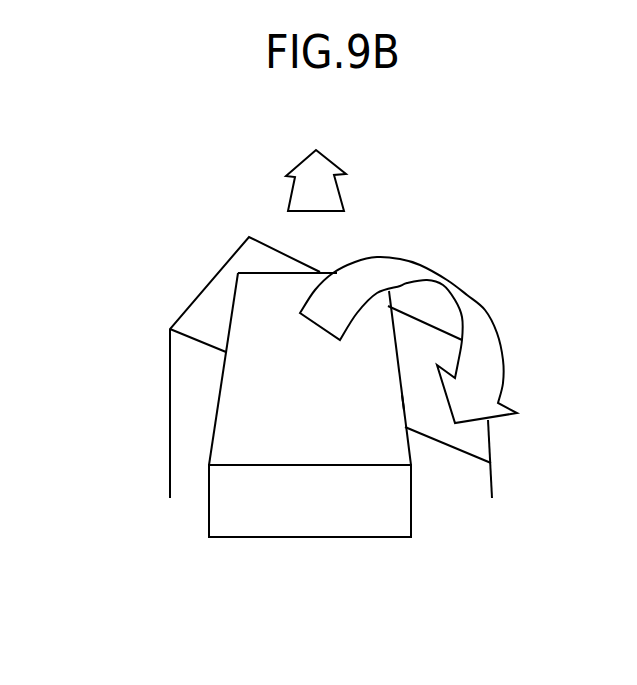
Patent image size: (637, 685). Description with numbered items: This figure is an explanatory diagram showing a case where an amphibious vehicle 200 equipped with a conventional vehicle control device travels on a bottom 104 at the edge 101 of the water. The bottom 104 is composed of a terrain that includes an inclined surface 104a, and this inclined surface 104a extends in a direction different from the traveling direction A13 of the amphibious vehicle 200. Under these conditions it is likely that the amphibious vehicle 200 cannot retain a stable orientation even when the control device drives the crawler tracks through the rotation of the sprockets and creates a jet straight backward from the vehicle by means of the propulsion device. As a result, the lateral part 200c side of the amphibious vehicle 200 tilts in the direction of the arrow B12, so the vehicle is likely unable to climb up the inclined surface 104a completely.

The edge of the water 101 is at (113, 440).
The bottom 104 is at (158, 334).
The inclined surface 104a is at (478, 443).
The amphibious vehicle 200 is at (311, 560).
The lateral part 200c is at (403, 402).
The traveling direction A13 is at (340, 193).
The arrow B12 is at (486, 309).